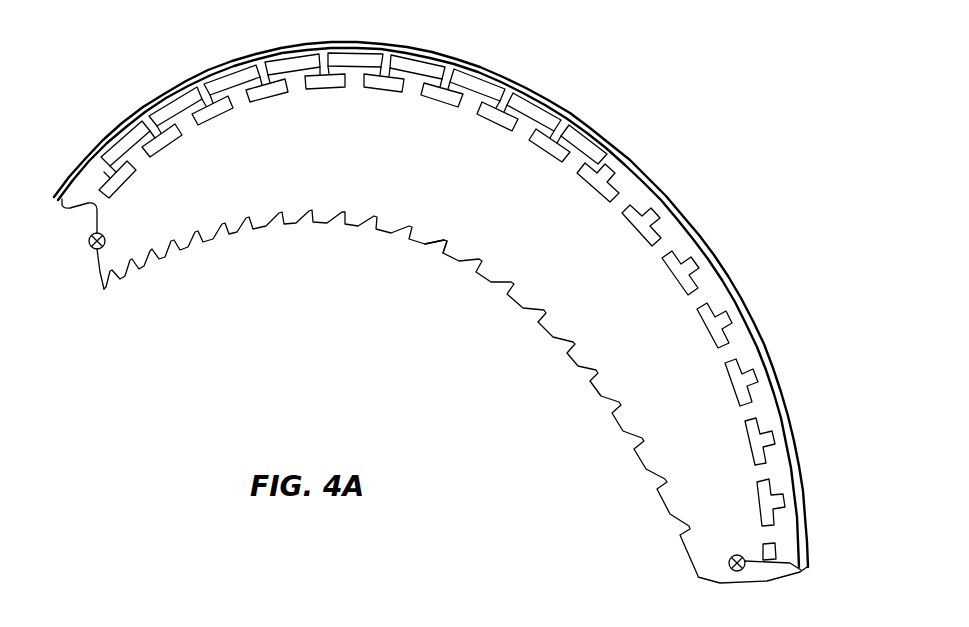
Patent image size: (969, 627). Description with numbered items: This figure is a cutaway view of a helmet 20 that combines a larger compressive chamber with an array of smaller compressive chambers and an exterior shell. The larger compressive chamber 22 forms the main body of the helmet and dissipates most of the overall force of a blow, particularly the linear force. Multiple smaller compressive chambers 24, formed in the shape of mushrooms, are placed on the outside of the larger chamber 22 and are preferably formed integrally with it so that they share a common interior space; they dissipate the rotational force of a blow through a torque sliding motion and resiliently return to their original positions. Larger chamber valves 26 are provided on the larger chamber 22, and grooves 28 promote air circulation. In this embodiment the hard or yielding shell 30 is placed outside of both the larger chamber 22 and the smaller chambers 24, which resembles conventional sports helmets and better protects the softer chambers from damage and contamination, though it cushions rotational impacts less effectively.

The helmet 20 is at (665, 108).
The larger compressive chamber 22 is at (521, 225).
The smaller compressive chambers 24 is at (370, 47).
The larger chamber valves 26 is at (89, 248).
The grooves 28 is at (446, 246).
The hard or yielding shell 30 is at (766, 336).